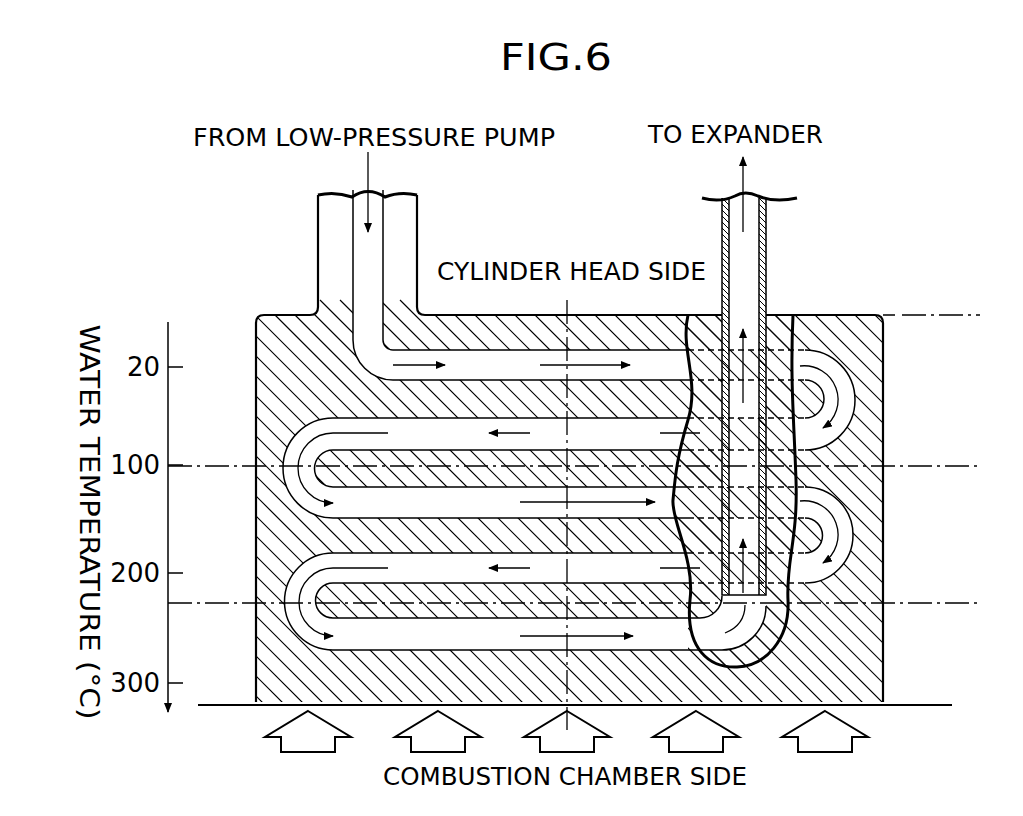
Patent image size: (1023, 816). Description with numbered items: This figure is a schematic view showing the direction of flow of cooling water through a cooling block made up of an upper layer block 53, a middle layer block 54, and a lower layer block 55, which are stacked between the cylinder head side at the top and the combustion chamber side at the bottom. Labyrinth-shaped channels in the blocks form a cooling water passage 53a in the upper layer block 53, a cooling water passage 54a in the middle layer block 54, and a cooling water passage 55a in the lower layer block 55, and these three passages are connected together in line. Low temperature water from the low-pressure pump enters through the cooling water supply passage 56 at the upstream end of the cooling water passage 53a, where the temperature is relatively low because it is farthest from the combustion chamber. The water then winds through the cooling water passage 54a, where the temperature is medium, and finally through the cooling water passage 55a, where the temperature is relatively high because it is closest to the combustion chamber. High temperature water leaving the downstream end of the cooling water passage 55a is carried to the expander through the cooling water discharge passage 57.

The upper layer block 53 is at (910, 318).
The middle layer block 54 is at (910, 468).
The lower layer block 55 is at (910, 605).
The cooling water passage 53a is at (506, 379).
The cooling water passage 54a is at (506, 513).
The cooling water passage 55a is at (506, 647).
The cooling water supply passage 56 is at (386, 286).
The cooling water discharge passage 57 is at (760, 286).